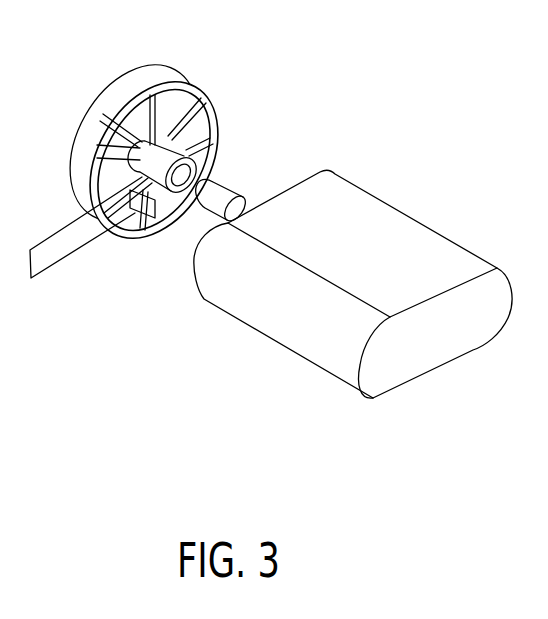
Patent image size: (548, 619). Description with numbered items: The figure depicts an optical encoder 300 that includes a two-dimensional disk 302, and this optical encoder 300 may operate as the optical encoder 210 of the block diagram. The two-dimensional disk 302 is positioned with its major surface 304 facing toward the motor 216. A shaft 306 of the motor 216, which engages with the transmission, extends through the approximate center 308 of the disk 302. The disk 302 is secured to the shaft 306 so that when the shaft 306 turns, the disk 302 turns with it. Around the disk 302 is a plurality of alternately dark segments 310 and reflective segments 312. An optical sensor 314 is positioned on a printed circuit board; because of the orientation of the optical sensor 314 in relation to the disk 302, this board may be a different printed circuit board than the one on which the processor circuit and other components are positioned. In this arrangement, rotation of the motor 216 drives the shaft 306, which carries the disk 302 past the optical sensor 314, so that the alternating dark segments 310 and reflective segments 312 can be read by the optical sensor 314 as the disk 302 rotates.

The optical encoder 210 is at (152, 327).
The motor 216 is at (282, 336).
The optical encoder 300 is at (132, 160).
The two-dimensional disk 302 is at (133, 122).
The major surface 304 is at (227, 192).
The shaft 306 is at (157, 172).
The approximate center 308 is at (100, 158).
The dark segments 310 is at (182, 90).
The reflective segments 312 is at (53, 258).
The optical sensor 314 is at (146, 230).